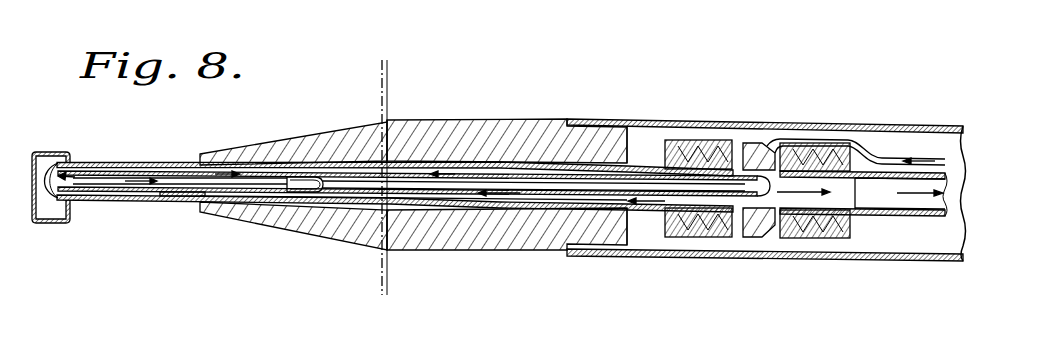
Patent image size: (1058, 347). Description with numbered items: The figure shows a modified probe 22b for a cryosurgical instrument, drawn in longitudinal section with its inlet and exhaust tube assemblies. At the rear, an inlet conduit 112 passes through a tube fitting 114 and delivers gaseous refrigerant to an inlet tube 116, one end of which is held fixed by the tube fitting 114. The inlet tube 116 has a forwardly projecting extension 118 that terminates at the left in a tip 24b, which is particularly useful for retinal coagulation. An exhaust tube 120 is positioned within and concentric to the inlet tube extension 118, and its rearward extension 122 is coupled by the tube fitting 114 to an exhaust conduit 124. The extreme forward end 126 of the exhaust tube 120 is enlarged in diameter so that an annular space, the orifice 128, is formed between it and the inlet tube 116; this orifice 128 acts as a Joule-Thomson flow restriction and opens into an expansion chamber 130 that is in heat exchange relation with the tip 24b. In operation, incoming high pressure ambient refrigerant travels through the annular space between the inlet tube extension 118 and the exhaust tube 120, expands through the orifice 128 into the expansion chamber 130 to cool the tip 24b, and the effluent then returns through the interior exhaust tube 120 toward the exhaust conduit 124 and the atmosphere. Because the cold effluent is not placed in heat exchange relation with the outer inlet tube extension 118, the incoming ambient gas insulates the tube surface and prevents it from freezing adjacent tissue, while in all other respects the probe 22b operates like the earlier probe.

The probe 22b is at (508, 117).
The tip 24b is at (54, 228).
The inlet conduit 112 is at (848, 145).
The tube fitting 114 is at (753, 143).
The inlet tube 116 is at (637, 160).
The inlet tube extension 118 is at (134, 199).
The exhaust tube 120 is at (178, 198).
The exhaust tube extension 122 is at (343, 186).
The exhaust conduit 124 is at (884, 198).
The forward end of exhaust tube 126 is at (88, 187).
The orifice 128 is at (96, 168).
The expansion chamber 130 is at (55, 178).